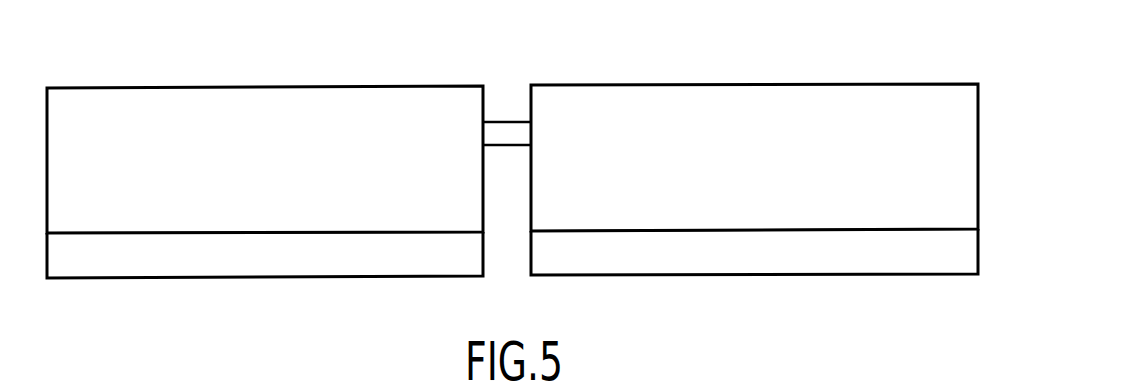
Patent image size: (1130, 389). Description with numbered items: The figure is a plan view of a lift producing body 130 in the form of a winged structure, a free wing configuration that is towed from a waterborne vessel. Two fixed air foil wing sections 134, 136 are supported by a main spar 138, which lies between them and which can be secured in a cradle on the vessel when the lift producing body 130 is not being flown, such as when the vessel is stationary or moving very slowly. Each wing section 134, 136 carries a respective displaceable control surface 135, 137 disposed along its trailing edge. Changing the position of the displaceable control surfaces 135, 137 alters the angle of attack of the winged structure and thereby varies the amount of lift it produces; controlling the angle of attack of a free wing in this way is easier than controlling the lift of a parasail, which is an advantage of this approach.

The lift producing body 130 is at (1025, 72).
The fixed air foil wing section 134 is at (288, 84).
The displaceable control surface 135 is at (287, 277).
The fixed air foil wing section 136 is at (693, 82).
The displaceable control surface 137 is at (673, 276).
The main spar 138 is at (507, 118).